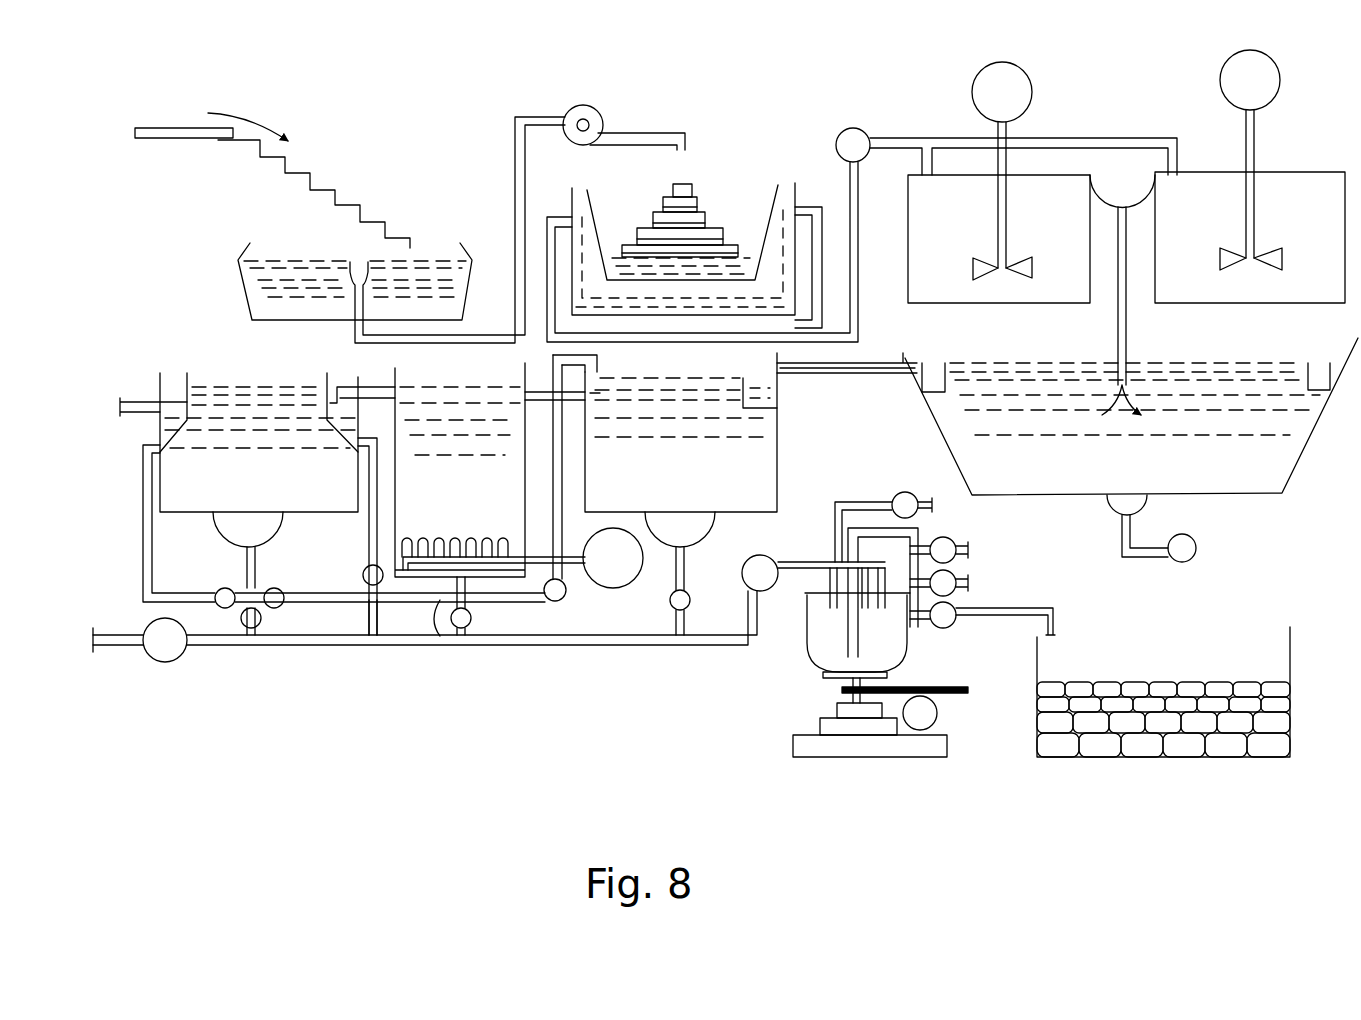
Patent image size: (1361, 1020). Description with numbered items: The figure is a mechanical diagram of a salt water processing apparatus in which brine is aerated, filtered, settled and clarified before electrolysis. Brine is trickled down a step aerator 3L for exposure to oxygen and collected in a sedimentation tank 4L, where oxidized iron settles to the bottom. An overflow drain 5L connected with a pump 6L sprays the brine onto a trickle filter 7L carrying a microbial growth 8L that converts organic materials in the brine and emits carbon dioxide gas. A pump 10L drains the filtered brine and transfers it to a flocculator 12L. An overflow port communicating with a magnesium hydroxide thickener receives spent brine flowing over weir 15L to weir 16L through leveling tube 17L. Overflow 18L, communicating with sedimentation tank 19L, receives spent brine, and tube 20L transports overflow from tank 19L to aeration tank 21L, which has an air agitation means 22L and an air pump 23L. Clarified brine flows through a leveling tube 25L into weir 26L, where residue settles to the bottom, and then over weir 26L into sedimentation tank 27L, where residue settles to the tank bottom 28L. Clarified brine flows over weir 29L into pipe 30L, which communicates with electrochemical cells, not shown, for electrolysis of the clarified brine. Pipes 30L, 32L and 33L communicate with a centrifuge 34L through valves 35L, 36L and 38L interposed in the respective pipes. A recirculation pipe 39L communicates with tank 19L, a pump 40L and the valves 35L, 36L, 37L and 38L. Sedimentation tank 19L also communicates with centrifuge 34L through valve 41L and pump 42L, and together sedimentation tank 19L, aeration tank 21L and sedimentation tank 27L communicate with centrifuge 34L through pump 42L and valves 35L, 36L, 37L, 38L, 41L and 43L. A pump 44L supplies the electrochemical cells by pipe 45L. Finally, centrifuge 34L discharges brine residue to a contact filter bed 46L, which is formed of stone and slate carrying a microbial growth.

The step aerator 3L is at (303, 193).
The sedimentation tank 4L is at (236, 278).
The overflow drain 5L is at (350, 254).
The pump 6L is at (585, 105).
The trickle filter 7L is at (708, 176).
The microbial growth 8L is at (653, 214).
The pump 10L is at (853, 128).
The flocculator 12L is at (990, 305).
The weir 15L is at (930, 402).
The weir 16L is at (760, 410).
The leveling tube 17L is at (822, 376).
The overflow 18L is at (760, 378).
The sedimentation tank 19L is at (784, 468).
The tube 20L is at (575, 393).
The aeration tank 21L is at (525, 478).
The air agitation means 22L is at (450, 531).
The air pump 23L is at (598, 588).
The leveling tube 25L is at (372, 386).
The weir 26L is at (340, 437).
The sedimentation tank 27L is at (315, 518).
The tank bottom 28L is at (215, 532).
The weir 29L is at (182, 385).
The pipe 30L is at (142, 498).
The pipe 32L is at (246, 565).
The pipe 33L is at (368, 556).
The centrifuge 34L is at (812, 655).
The valve 35L is at (215, 594).
The valve 36L is at (260, 645).
The valve 37L is at (282, 605).
The valve 38L is at (378, 618).
The recirculation pipe 39L is at (598, 356).
The pump 40L is at (558, 603).
The valve 41L is at (690, 592).
The pump 42L is at (757, 561).
The valve 43L is at (465, 630).
The pump 44L is at (186, 655).
The pipe 45L is at (110, 648).
The contact filter bed 46L is at (1031, 703).